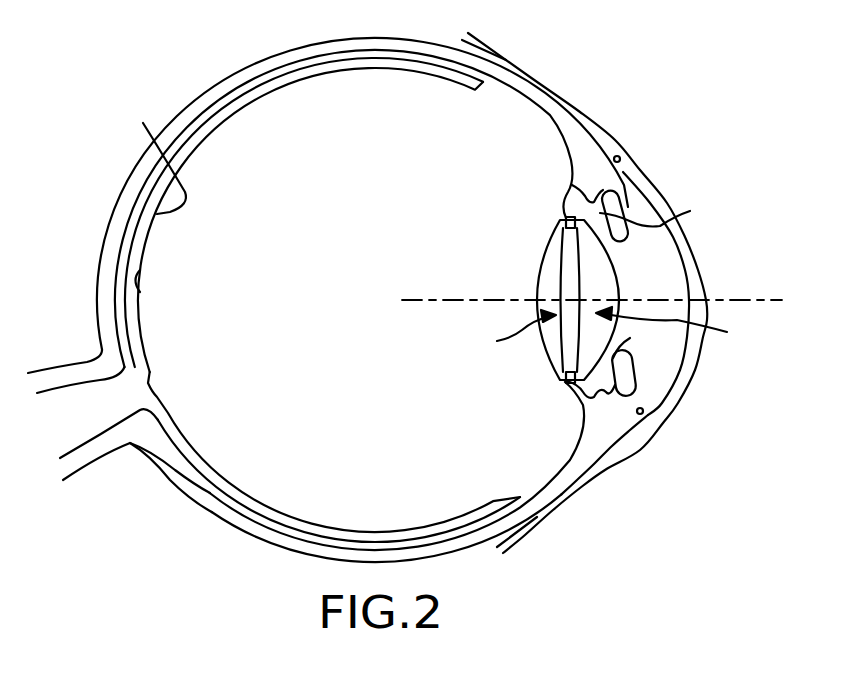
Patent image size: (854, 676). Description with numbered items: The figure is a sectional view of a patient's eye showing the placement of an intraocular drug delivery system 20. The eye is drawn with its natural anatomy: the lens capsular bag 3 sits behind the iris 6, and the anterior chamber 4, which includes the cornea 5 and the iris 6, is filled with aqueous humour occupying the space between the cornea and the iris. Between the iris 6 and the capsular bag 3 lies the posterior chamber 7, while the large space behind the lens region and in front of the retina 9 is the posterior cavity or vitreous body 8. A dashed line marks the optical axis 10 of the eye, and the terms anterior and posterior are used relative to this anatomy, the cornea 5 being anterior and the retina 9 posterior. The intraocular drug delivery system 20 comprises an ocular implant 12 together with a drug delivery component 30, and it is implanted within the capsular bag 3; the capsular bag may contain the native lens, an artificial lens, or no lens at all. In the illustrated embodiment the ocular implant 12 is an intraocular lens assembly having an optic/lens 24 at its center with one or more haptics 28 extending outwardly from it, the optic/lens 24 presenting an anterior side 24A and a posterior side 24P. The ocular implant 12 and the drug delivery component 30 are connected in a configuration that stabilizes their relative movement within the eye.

The lens capsular bag 3 is at (566, 222).
The anterior chamber 4 is at (648, 283).
The cornea 5 is at (672, 200).
The iris 6 is at (690, 211).
The posterior chamber 7 is at (630, 338).
The posterior cavity/vitreous body 8 is at (350, 369).
The retina 9 is at (158, 155).
The optical axis 10 is at (609, 301).
The ocular implant 12 is at (507, 332).
The intraocular drug delivery system 20 is at (677, 327).
The optic/lens 24 is at (559, 258).
The anterior side 24A is at (578, 283).
The posterior side 24P is at (559, 293).
The haptics 28 is at (560, 175).
The drug delivery component 30 is at (576, 219).